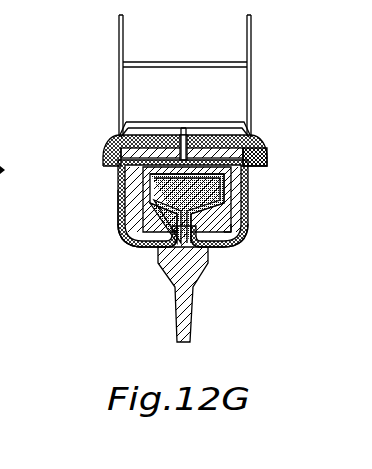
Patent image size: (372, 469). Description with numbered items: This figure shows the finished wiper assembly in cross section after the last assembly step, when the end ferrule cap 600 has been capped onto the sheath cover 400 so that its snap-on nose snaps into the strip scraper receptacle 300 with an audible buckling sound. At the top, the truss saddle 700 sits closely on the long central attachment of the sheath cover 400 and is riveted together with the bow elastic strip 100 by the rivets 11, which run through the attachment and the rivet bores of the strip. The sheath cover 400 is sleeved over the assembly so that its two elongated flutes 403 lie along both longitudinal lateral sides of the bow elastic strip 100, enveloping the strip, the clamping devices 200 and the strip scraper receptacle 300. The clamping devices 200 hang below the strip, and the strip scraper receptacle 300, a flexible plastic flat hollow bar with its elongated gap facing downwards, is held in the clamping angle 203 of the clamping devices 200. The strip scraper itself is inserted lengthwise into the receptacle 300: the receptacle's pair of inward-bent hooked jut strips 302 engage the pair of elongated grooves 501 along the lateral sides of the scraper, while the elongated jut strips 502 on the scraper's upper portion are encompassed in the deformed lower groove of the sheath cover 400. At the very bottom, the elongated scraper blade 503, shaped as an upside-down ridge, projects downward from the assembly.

The truss saddle 700 is at (253, 75).
The end ferrule cap 600 is at (115, 132).
The bow elastic strip 100 is at (107, 152).
The rivets 11 is at (183, 133).
The sheath cover 400 is at (253, 132).
The elongated flutes 403 is at (260, 152).
The clamping devices 200 is at (138, 188).
The elongated grooves 501 is at (138, 221).
The strip scraper receptacle 300 is at (224, 198).
The elongated jut strips 502 is at (233, 232).
The hooked jut strips 302 is at (220, 248).
The clamping angle 203 is at (130, 250).
The scraper blade 503 is at (190, 312).